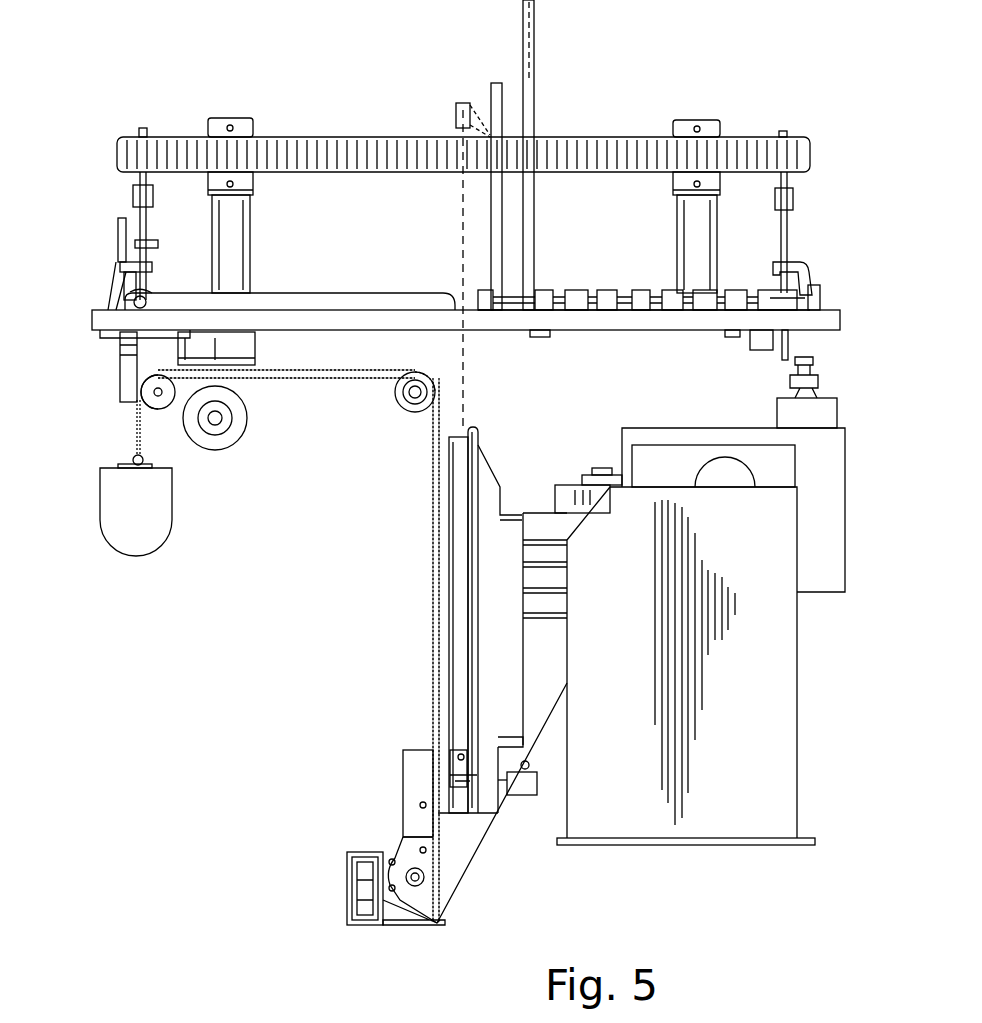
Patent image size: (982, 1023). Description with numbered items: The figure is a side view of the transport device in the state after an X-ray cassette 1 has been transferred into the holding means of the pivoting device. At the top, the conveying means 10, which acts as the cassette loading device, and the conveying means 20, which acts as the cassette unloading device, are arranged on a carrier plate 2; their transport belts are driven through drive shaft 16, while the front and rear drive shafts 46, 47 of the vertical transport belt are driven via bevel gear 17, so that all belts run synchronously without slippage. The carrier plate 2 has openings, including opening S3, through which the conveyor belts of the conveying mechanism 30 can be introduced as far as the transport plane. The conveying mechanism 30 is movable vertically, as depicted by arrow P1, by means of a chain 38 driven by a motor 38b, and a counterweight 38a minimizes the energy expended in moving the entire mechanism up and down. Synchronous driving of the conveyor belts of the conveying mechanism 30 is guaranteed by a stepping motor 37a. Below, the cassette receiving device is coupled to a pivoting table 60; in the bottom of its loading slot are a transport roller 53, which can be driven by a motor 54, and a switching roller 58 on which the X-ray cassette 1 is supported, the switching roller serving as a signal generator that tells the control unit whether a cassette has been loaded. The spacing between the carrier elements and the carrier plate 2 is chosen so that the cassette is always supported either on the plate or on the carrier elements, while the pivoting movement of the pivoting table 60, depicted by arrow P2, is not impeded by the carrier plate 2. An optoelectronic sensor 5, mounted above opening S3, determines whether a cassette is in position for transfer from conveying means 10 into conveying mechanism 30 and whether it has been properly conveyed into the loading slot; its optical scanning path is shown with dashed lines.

The X-ray cassette 1 is at (532, 12).
The carrier plate 2 is at (838, 320).
The optoelectronic sensor 5 is at (456, 110).
The conveying means 10 is at (609, 272).
The drive shaft 16 is at (130, 287).
The bevel gear 17 is at (795, 298).
The conveying means 20 is at (300, 278).
The conveying mechanism 30 is at (392, 806).
The stepping motor 37a is at (362, 888).
The chain 38 is at (353, 378).
The counterweight 38a is at (162, 518).
The motor 38b is at (233, 435).
The front drive shaft 46 is at (787, 222).
The rear drive shaft 47 is at (140, 217).
The transport roller 53 is at (456, 762).
The motor 54 is at (520, 800).
The switching roller 58 is at (433, 688).
The pivoting table 60 is at (818, 712).
The opening S3 is at (404, 268).
The arrow P1 is at (80, 520).
The arrow P2 is at (505, 438).